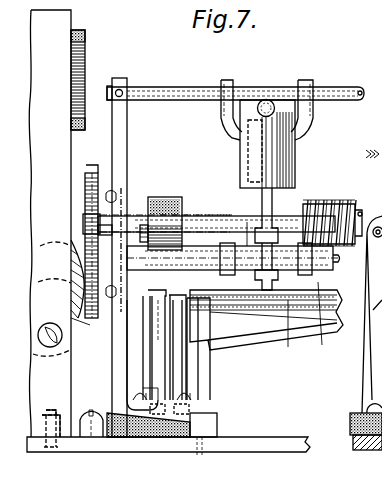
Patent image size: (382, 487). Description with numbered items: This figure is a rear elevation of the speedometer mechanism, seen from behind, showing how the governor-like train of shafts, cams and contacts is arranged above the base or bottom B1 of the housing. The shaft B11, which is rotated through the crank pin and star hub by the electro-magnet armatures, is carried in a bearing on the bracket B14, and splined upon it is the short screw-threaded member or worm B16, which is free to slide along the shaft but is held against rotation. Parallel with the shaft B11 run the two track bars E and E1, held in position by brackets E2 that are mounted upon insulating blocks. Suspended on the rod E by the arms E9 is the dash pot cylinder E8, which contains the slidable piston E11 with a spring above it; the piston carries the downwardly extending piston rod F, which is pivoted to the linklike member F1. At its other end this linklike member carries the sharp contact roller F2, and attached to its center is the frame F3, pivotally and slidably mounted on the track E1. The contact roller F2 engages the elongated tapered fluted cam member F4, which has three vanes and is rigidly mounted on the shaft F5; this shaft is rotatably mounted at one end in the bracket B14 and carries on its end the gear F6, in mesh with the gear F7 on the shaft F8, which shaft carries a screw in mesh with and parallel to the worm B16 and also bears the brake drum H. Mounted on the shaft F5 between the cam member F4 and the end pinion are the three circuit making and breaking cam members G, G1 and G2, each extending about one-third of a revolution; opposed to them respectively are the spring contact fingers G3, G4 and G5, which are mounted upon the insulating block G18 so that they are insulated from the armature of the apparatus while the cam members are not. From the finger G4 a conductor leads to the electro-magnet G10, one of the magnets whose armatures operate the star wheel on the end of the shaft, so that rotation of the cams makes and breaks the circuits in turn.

The base or bottom of the housing B1 is at (270, 447).
The electro-magnet G10 is at (85, 56).
The bracket E2 is at (120, 129).
The track bar E is at (167, 88).
The arm E9 is at (304, 80).
The dash pot cylinder E8 is at (282, 146).
The piston E11 is at (257, 168).
The piston rod F is at (262, 203).
The shaft B11 is at (287, 220).
The short screw-threaded member (worm) B16 is at (336, 206).
The brake drum H is at (155, 197).
The shaft F8 is at (192, 217).
The track bar E1 is at (197, 257).
The linklike member F1 is at (247, 222).
The circuit making and breaking cam member G is at (197, 298).
The gear F7 is at (93, 166).
The shaft F5 is at (80, 312).
The gear F6 is at (85, 352).
The circuit making and breaking cam member G2 is at (158, 300).
The circuit making and breaking cam member G1 is at (182, 298).
The spring contact finger G3 is at (197, 355).
The spring contact finger G4 is at (176, 362).
The spring contact finger G5 is at (156, 370).
The contact roller F2 is at (256, 282).
The frame F3 is at (320, 290).
The tapered fluted cam member F4 is at (288, 300).
The insulating block G18 is at (200, 438).
The bracket B14 is at (133, 376).